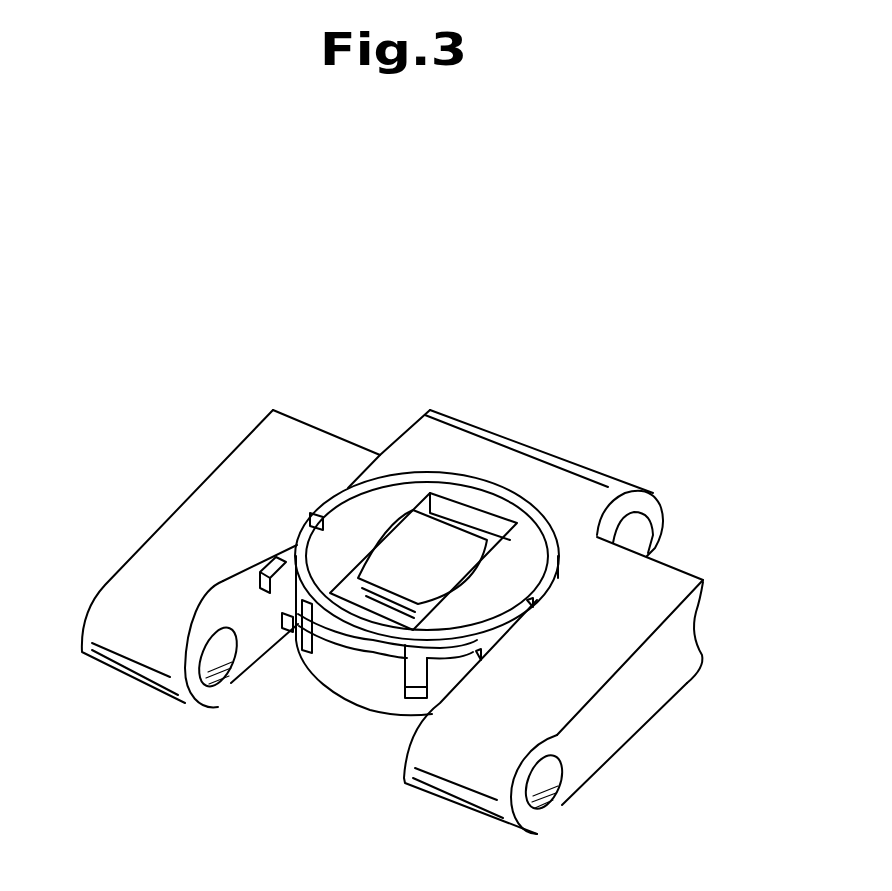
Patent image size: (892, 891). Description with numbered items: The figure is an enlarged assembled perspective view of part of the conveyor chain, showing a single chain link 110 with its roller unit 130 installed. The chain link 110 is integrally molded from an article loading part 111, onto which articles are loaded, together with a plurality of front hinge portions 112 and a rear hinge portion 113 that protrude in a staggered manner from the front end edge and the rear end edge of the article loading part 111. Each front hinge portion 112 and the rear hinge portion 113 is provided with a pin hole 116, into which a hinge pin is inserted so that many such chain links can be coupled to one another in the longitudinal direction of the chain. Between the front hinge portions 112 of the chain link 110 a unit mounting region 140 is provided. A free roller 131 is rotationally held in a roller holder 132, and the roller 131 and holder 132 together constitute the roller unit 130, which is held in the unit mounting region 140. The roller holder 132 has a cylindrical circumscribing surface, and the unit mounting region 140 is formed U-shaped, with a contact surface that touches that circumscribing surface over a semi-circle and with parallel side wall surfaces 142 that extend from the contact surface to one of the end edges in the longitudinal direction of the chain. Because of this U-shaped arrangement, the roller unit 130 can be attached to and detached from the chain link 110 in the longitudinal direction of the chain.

The chain link 110 is at (198, 362).
The article loading part 111 is at (220, 507).
The front hinge portion 112 is at (137, 638).
The rear hinge portion 113 is at (493, 468).
The pin hole 116 is at (633, 538).
The roller unit 130 is at (360, 665).
The free roller 131 is at (375, 620).
The roller holder 132 is at (390, 573).
The unit mounting region 140 is at (380, 753).
The side wall surface 142 is at (240, 612).